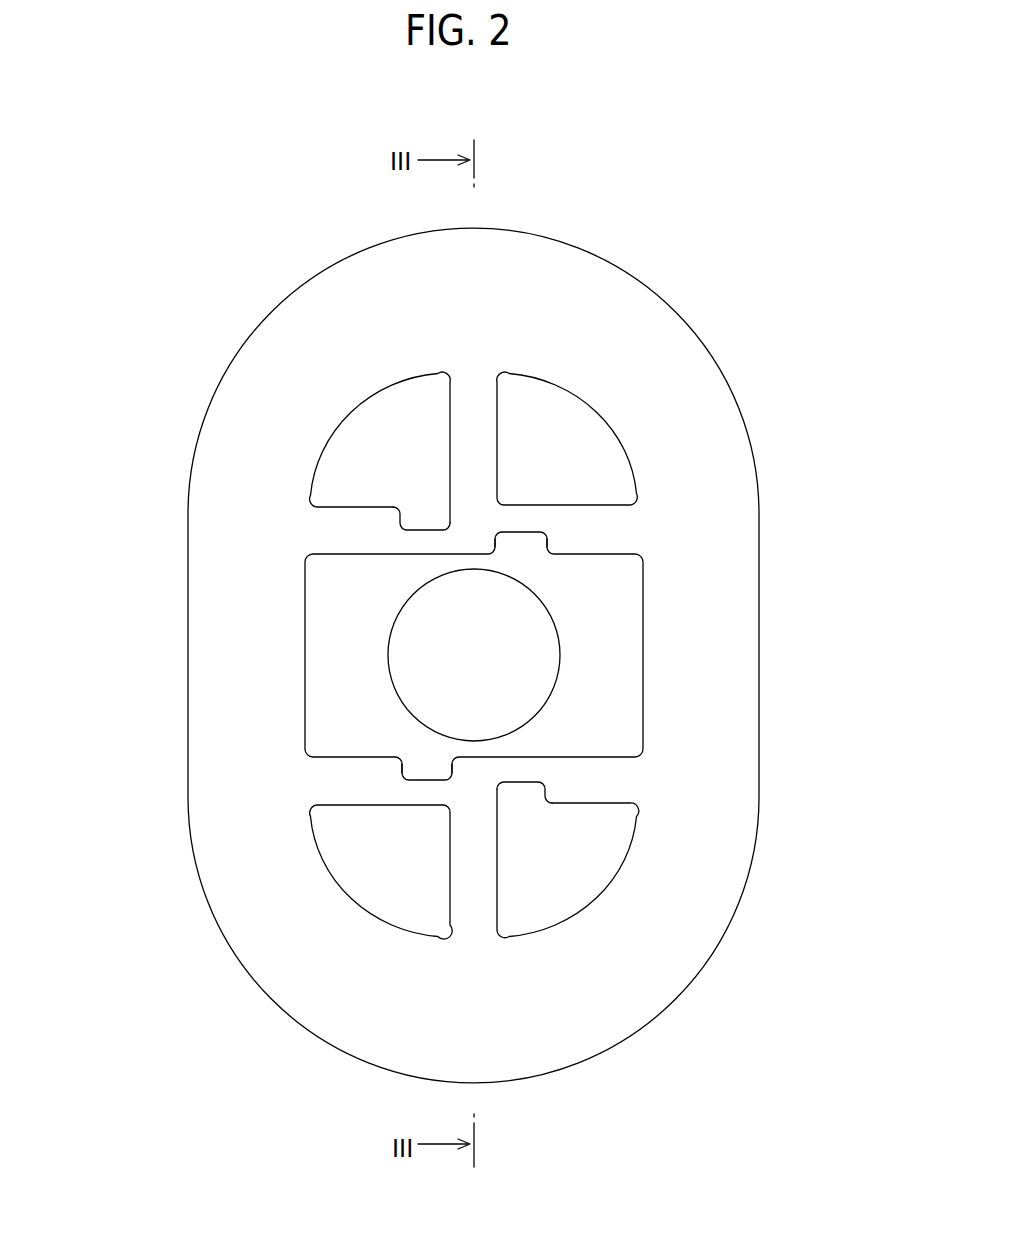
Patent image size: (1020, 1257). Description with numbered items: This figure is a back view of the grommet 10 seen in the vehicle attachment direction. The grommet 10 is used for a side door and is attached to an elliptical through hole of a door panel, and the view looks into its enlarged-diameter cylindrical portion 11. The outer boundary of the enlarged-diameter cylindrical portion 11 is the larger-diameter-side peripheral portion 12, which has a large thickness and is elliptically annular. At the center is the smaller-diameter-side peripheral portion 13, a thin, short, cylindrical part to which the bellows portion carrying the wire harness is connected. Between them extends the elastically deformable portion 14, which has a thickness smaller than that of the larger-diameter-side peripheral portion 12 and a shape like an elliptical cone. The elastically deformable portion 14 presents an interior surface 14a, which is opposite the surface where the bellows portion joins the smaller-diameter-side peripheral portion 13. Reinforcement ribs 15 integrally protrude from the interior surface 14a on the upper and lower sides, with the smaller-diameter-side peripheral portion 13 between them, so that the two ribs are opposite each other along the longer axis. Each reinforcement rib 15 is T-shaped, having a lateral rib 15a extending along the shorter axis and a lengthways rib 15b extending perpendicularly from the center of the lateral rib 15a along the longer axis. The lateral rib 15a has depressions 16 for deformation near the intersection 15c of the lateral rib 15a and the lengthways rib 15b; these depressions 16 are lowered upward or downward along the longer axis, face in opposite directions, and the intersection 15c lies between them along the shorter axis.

The grommet 10 is at (473, 655).
The enlarged-diameter cylindrical portion 11 is at (453, 655).
The larger-diameter-side peripheral portion 12 is at (406, 655).
The smaller-diameter-side peripheral portion 13 is at (337, 655).
The elastically deformable portion 14 is at (379, 656).
The interior surface 14a is at (310, 326).
The reinforcement rib 15 is at (474, 655).
The lateral rib 15a is at (474, 655).
The lengthways rib 15b is at (478, 655).
The intersection 15c is at (478, 655).
The depression for deformation 16 is at (475, 657).